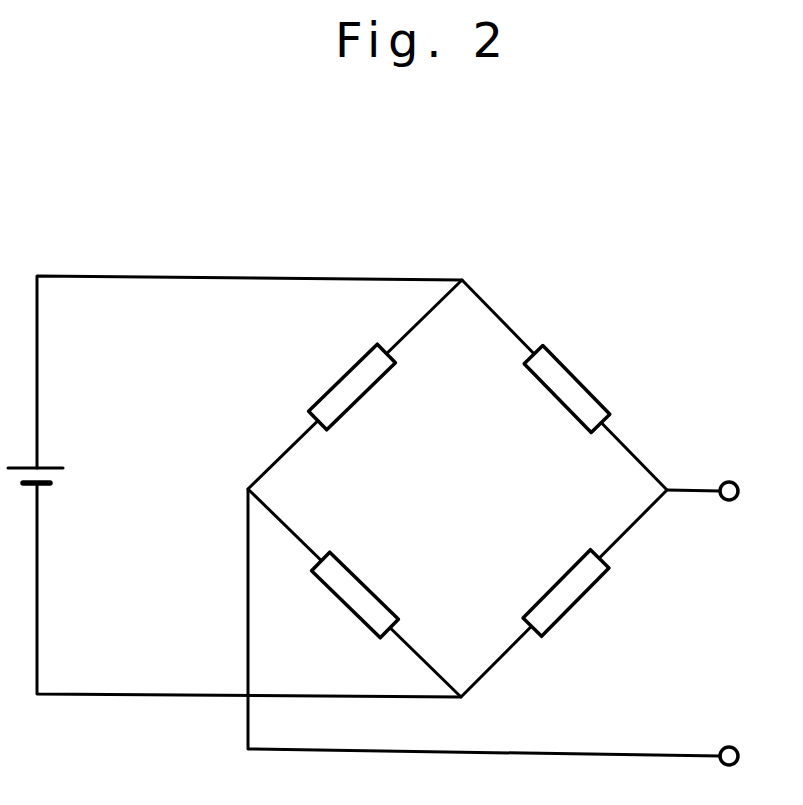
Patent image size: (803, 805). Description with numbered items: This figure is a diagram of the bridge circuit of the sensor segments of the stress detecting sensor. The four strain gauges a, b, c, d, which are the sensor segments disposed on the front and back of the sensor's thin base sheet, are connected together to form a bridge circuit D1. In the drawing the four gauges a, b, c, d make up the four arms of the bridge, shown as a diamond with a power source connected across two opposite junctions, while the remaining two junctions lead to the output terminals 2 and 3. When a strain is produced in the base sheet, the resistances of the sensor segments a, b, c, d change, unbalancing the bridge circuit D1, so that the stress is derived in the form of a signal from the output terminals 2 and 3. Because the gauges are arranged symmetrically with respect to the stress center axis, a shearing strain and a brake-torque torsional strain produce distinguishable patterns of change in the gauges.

The output terminal 2 is at (750, 495).
The output terminal 3 is at (750, 758).
The strain gauge a is at (346, 383).
The strain gauge b is at (351, 597).
The strain gauge c is at (566, 597).
The strain gauge d is at (567, 380).
The bridge circuit D1 is at (457, 488).